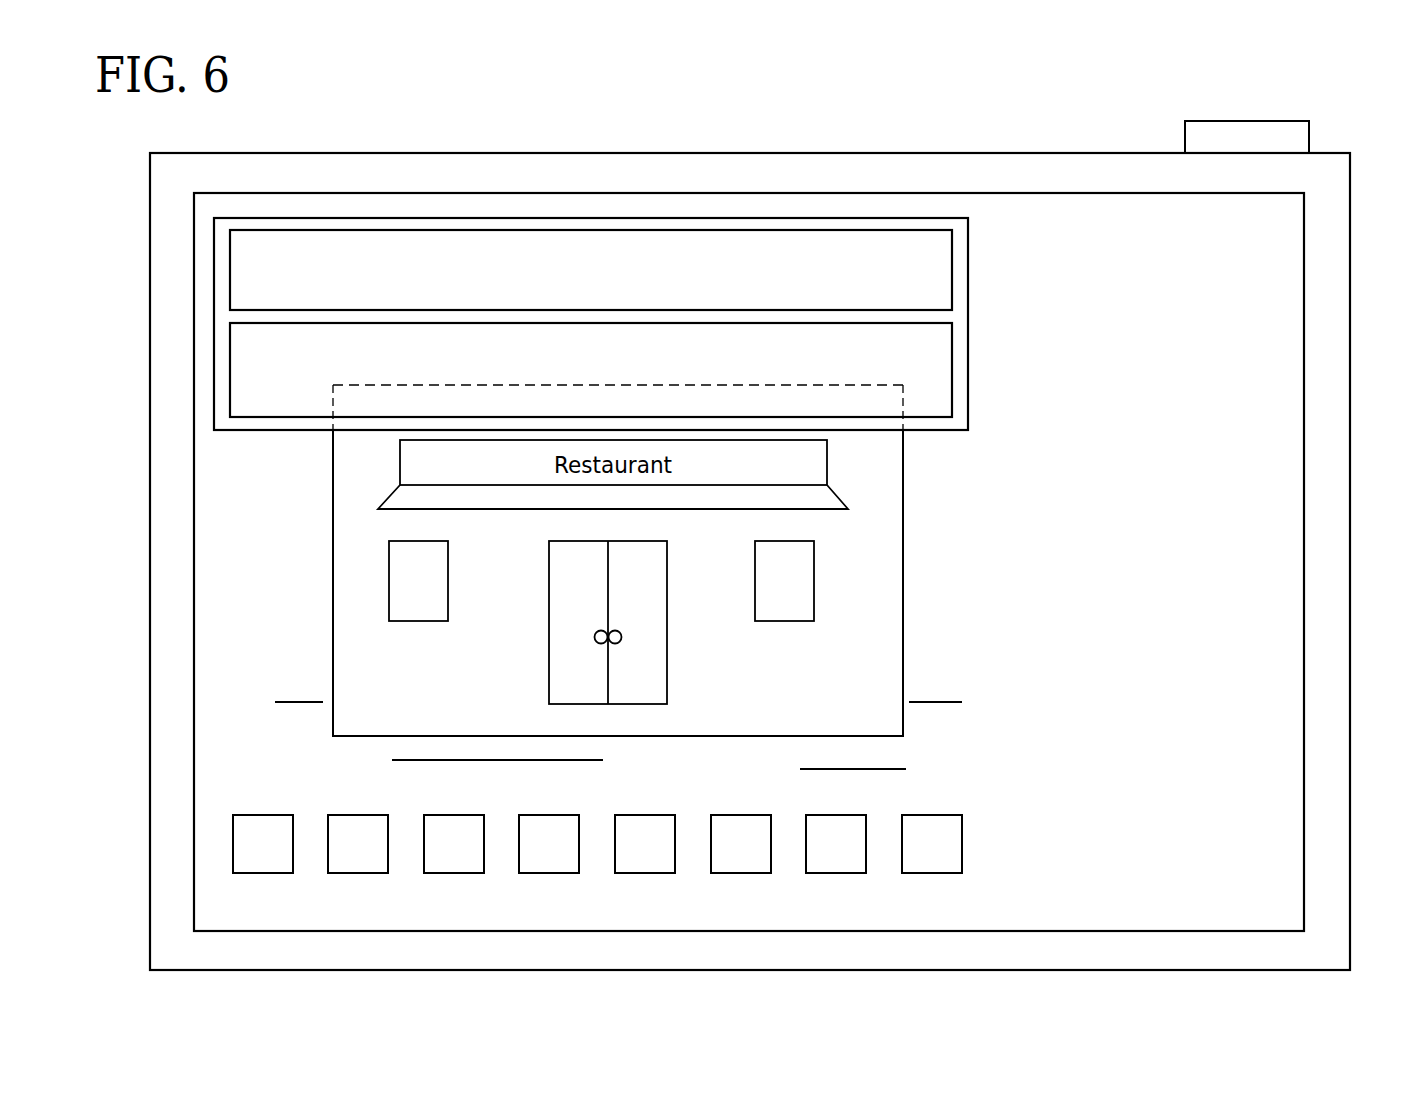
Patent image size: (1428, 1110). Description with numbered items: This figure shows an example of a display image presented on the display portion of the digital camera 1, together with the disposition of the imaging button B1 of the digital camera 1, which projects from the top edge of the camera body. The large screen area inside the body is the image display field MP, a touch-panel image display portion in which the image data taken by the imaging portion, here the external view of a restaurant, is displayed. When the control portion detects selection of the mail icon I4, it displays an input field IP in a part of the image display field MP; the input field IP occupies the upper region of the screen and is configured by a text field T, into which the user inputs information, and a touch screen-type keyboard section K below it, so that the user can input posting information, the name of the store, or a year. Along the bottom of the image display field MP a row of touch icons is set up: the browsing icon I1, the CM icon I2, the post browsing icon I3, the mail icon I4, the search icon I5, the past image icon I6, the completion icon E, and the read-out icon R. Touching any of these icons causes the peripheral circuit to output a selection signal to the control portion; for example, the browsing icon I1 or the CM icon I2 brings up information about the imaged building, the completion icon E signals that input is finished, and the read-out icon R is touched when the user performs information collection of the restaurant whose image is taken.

The digital camera 1 is at (733, 143).
The imaging button B1 is at (1242, 120).
The image display field MP is at (1306, 755).
The input field IP is at (968, 261).
The text field T is at (952, 291).
The keyboard section K is at (952, 367).
The browsing icon I1 is at (261, 873).
The CM icon I2 is at (356, 873).
The post browsing icon I3 is at (452, 873).
The mail icon I4 is at (547, 873).
The search icon I5 is at (643, 873).
The past image icon I6 is at (739, 873).
The completion icon E is at (834, 873).
The read-out icon R is at (930, 873).